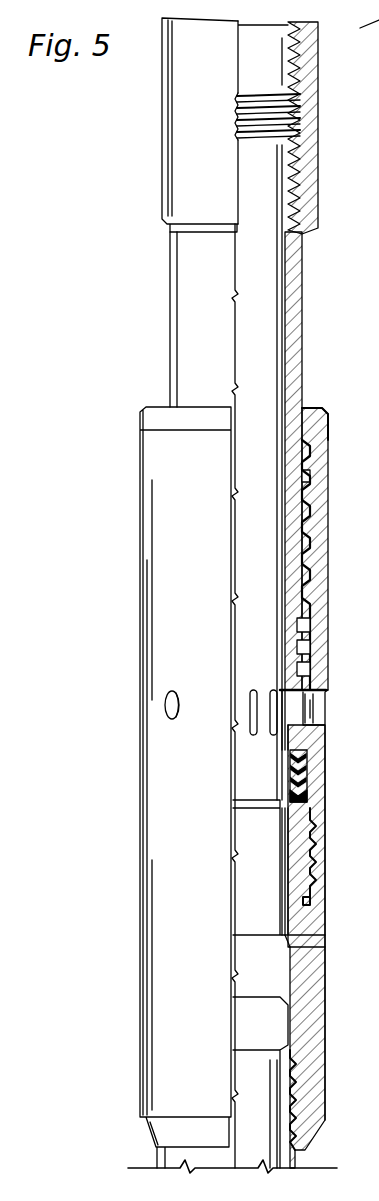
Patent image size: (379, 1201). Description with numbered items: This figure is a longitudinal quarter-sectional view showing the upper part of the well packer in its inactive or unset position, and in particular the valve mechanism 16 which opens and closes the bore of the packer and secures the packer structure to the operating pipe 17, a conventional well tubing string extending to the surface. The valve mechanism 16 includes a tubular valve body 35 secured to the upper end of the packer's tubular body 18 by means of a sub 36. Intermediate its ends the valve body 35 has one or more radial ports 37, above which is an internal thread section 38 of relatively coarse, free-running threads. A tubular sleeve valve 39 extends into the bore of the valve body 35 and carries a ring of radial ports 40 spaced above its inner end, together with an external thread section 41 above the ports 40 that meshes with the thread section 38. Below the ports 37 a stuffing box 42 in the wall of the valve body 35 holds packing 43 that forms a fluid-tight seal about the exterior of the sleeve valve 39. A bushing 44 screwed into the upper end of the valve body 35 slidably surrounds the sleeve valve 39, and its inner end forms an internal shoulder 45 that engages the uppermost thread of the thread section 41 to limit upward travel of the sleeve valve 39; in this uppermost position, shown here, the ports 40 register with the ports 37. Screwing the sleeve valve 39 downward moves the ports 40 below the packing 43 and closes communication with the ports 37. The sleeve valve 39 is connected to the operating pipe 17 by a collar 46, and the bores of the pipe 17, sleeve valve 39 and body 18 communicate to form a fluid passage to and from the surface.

The valve mechanism 16 is at (328, 637).
The operating pipe 17 is at (290, 58).
The tubular body 18 is at (293, 1162).
The tubular valve body 35 is at (323, 523).
The sub 36 is at (312, 990).
The radial ports 37 is at (179, 703).
The internal thread section 38 is at (305, 557).
The tubular sleeve valve 39 is at (297, 302).
The radial ports 40 is at (271, 690).
The thread section 41 is at (305, 568).
The stuffing box 42 is at (310, 773).
The packing 43 is at (310, 791).
The bushing 44 is at (327, 424).
The internal shoulder 45 is at (308, 478).
The collar 46 is at (305, 125).